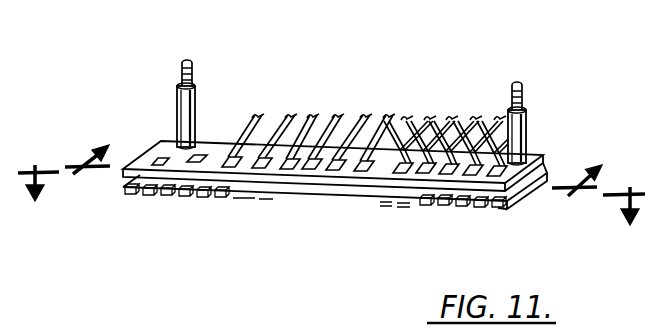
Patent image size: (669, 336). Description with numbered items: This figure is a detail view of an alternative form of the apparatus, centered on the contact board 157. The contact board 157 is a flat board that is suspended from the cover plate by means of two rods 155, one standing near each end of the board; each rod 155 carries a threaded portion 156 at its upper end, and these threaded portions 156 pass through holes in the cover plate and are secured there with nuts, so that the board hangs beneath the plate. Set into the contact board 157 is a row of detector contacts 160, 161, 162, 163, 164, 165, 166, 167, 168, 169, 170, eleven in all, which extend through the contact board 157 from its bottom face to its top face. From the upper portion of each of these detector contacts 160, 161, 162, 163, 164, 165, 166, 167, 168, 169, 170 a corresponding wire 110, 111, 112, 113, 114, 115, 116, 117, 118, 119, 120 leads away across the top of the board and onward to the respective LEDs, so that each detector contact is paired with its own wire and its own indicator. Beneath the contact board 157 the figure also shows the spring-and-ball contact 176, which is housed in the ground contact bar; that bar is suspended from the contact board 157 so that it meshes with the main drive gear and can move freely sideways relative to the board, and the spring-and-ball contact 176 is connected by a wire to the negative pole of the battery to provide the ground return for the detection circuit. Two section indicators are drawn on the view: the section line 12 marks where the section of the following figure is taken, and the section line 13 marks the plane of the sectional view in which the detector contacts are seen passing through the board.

The section line 12- 12 is at (331, 211).
The section line 13- 13 is at (351, 161).
The wire 110 is at (245, 116).
The wire 111 is at (283, 115).
The wire 112 is at (304, 115).
The wire 113 is at (330, 115).
The wire 114 is at (356, 116).
The wire 115 is at (408, 117).
The wire 116 is at (431, 117).
The wire 117 is at (452, 117).
The wire 118 is at (478, 117).
The wire 119 is at (500, 117).
The wire 120 is at (528, 133).
The rod 155 is at (183, 108).
The threaded portion 156 is at (178, 70).
The contact board 157 is at (540, 153).
The detector contact 160 is at (152, 161).
The detector contact 161 is at (190, 178).
The detector contact 162 is at (219, 180).
The detector contact 163 is at (225, 188).
The detector contact 164 is at (292, 168).
The detector contact 165 is at (323, 187).
The detector contact 166 is at (356, 174).
The detector contact 167 is at (360, 198).
The detector contact 168 is at (415, 194).
The detector contact 169 is at (449, 212).
The detector contact 170 is at (524, 180).
The spring-and-ball contact 176 is at (318, 173).